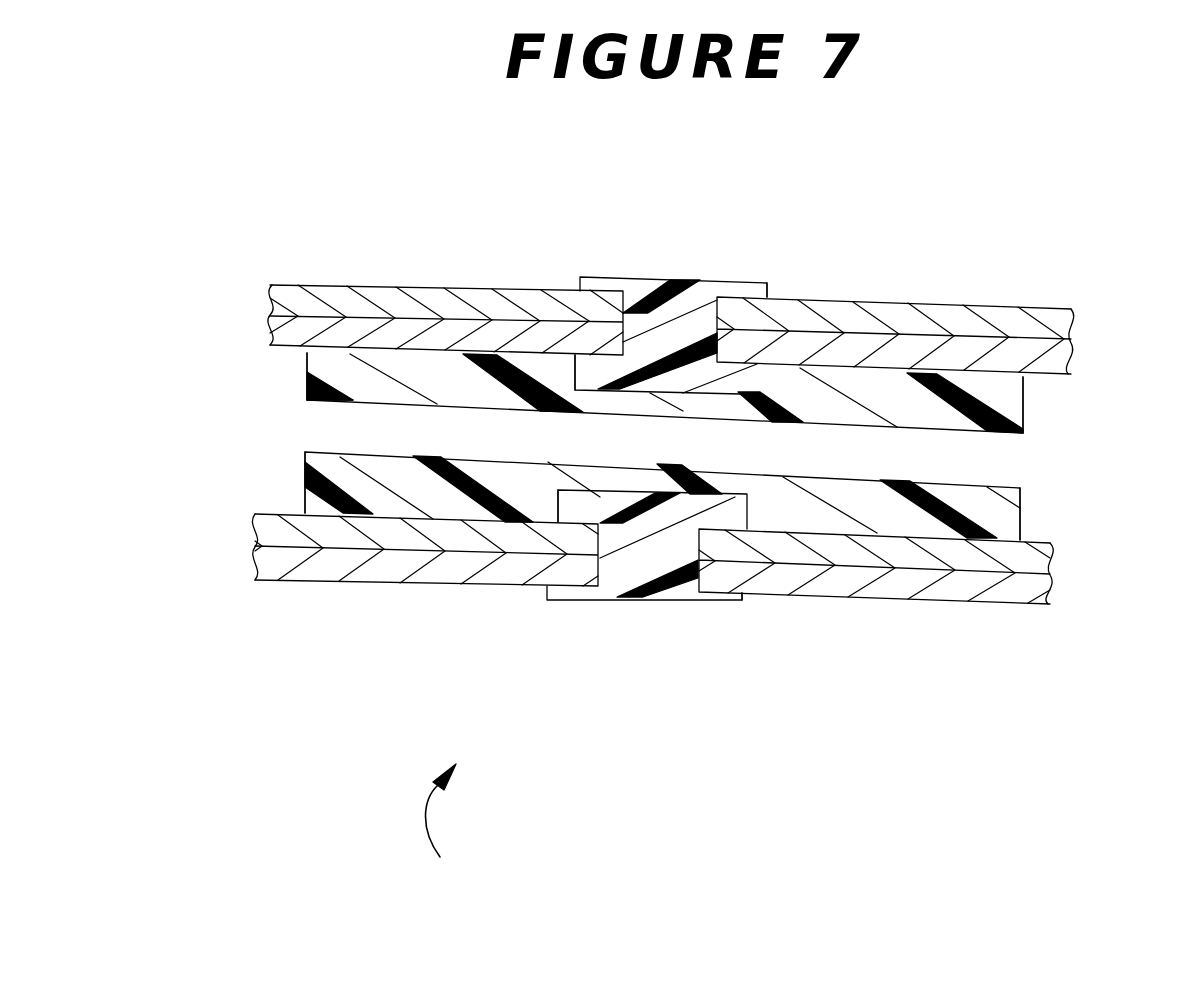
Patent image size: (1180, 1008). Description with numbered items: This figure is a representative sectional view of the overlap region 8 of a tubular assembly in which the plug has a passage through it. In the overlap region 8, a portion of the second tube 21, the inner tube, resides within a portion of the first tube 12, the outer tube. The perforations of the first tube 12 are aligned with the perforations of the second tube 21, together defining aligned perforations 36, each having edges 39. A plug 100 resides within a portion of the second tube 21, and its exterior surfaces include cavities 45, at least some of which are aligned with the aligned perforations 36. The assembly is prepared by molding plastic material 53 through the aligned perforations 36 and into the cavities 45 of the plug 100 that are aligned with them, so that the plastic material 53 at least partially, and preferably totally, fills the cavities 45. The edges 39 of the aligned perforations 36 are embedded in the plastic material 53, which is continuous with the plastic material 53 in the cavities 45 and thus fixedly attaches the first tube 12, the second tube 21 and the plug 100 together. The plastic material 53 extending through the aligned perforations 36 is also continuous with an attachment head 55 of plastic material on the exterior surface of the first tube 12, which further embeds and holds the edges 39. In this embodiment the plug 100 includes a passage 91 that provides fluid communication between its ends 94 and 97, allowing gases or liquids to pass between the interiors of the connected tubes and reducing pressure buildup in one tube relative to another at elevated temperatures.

The overlap region 8 is at (452, 825).
The first tube 12 is at (389, 290).
The second tube 21 is at (270, 342).
The aligned perforations 36 is at (668, 310).
The edges of aligned perforations 39 is at (641, 300).
The cavities 45 is at (760, 360).
The plastic material 53 is at (577, 370).
The attachment head 55 is at (757, 292).
The passage 91 is at (857, 464).
The end of plug 94 is at (307, 358).
The end of plug 97 is at (1023, 393).
The plug 100 is at (478, 393).